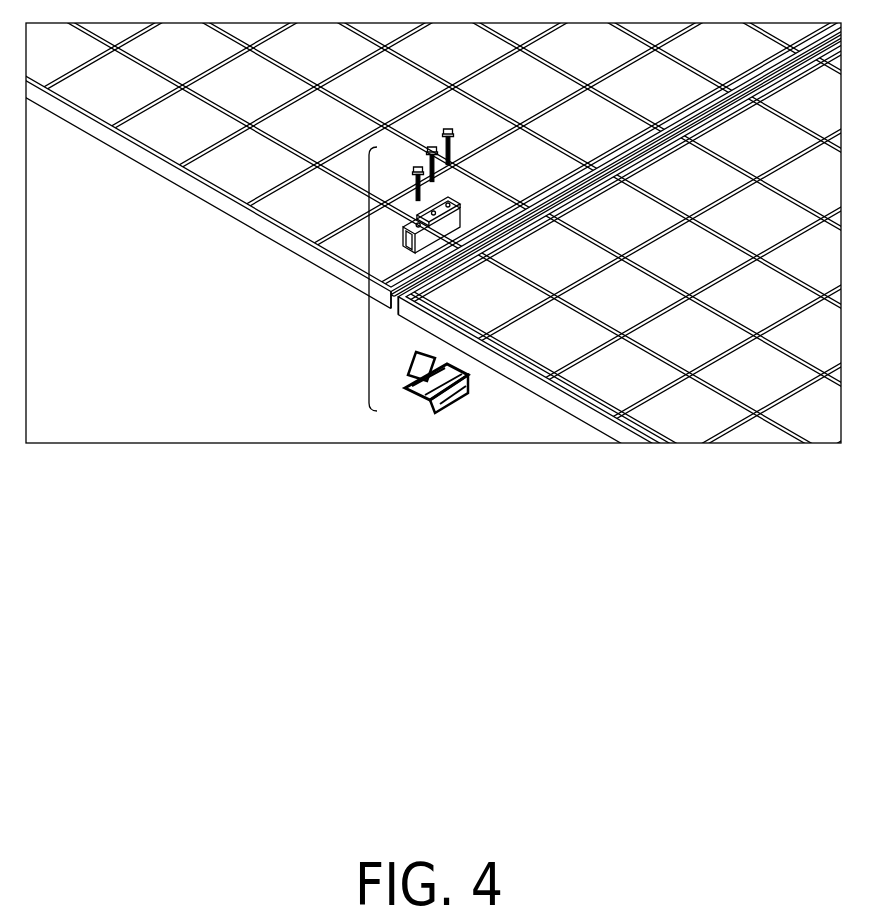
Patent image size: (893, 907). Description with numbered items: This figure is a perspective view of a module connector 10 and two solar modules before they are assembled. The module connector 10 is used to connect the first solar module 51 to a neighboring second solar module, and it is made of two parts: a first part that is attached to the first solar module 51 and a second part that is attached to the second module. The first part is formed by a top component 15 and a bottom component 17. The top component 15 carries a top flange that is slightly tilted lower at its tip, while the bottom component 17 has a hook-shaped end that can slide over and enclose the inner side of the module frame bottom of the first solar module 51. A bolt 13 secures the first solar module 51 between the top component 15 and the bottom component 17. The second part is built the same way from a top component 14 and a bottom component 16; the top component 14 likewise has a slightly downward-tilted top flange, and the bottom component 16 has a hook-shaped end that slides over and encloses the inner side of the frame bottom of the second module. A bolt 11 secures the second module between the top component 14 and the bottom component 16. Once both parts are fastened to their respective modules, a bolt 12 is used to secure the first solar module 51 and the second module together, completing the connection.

The module connector 10 is at (369, 284).
The bolt 11 is at (414, 166).
The bolt 12 is at (432, 146).
The bolt 13 is at (449, 129).
The top component 14 is at (400, 246).
The top component 15 is at (462, 205).
The bottom component 16 is at (427, 410).
The bottom component 17 is at (462, 385).
The first solar module 51 is at (265, 240).